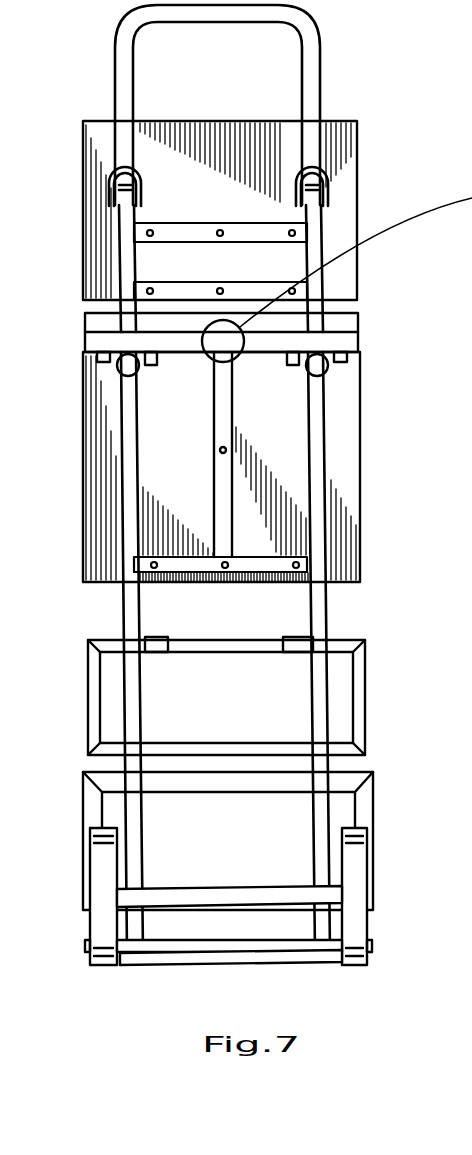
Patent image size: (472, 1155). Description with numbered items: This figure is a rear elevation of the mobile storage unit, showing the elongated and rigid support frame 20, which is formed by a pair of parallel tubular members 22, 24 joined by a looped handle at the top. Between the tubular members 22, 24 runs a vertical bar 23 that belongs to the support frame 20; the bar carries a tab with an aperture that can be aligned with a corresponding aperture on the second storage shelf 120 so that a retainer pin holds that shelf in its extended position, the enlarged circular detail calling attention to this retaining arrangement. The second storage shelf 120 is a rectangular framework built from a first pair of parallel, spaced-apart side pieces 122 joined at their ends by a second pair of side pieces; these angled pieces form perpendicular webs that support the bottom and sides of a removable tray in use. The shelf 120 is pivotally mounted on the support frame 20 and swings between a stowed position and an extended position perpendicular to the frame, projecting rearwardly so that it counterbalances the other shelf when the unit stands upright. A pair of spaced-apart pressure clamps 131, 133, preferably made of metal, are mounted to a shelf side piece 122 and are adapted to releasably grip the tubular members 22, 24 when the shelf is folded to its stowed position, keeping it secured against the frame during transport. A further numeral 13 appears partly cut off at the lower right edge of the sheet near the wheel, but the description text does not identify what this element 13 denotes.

The second storage shelf 120 is at (345, 342).
The pressure clamp 133 is at (328, 358).
The pressure clamp 131 is at (108, 358).
The vertical bar 23 is at (222, 387).
The support frame 20 is at (315, 462).
The tubular member 24 is at (130, 590).
The tubular member 22 is at (317, 602).
The side piece 122 is at (276, 836).
The wheel 13 is at (407, 914).